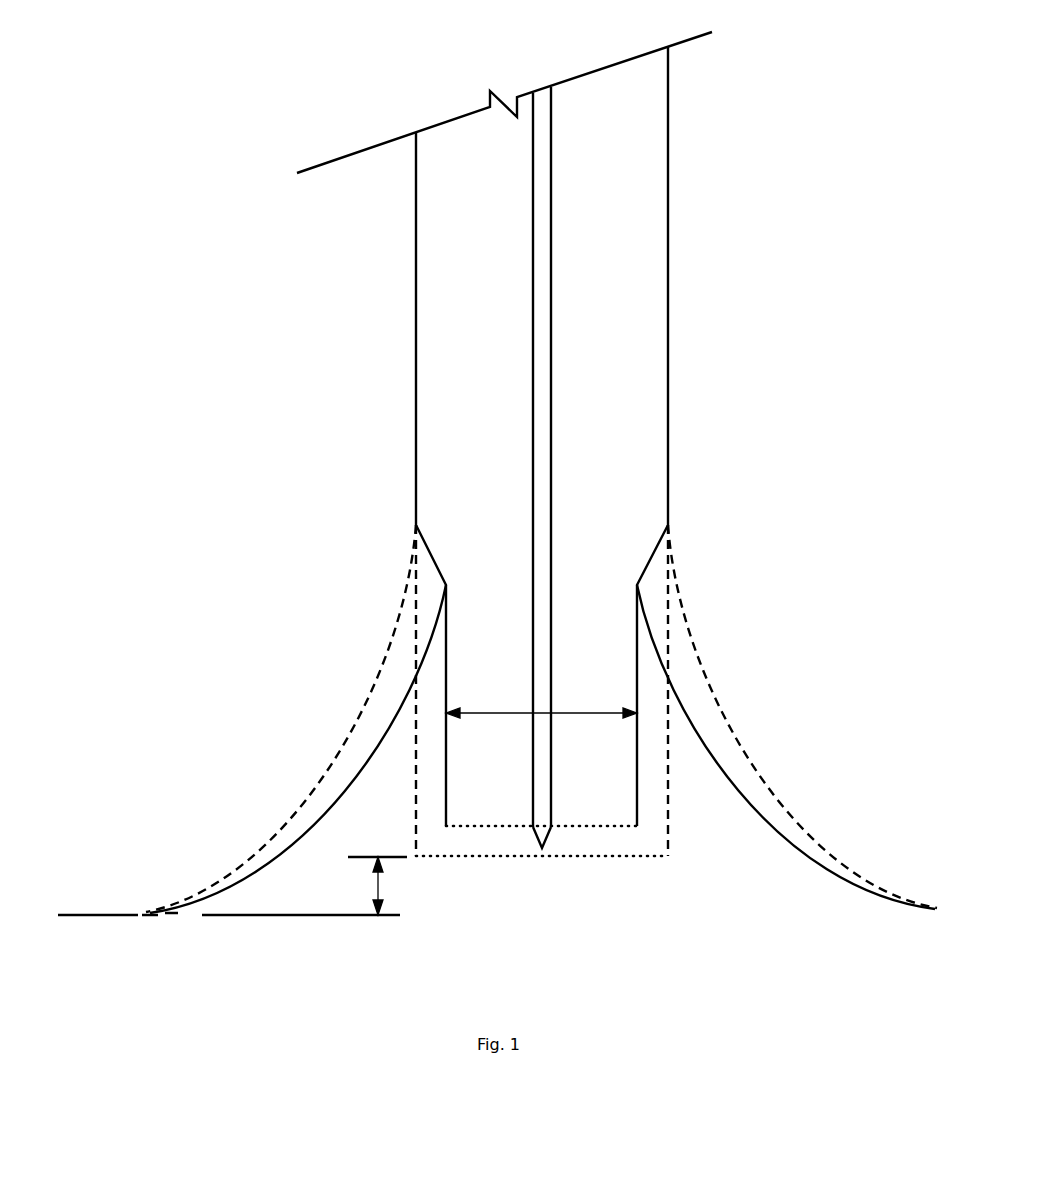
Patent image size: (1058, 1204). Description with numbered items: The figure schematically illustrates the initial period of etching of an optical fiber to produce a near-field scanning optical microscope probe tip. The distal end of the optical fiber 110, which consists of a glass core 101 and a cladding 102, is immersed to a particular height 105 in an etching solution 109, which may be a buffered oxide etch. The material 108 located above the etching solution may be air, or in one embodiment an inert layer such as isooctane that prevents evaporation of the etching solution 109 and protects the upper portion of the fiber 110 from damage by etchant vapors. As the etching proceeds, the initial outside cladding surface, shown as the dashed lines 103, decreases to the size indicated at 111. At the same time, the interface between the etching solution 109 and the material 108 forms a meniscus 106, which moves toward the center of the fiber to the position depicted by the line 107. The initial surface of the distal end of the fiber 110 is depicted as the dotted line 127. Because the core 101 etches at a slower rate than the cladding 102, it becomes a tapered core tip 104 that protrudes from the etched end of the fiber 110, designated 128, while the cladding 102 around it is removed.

The glass core 101 is at (552, 323).
The cladding 102 is at (669, 398).
The initial outside cladding surface 103 is at (417, 778).
The tapered core tip 104 is at (545, 842).
The height 105 is at (383, 887).
The meniscus 106 is at (386, 646).
The meniscus position line 107 is at (288, 857).
The material above the etching solution 108 is at (129, 884).
The etching solution 109 is at (129, 954).
The optical fiber 110 is at (450, 332).
The reduced cladding size 111 is at (593, 713).
The initial surface of the distal end 127 is at (483, 857).
The etched end of the fiber 128 is at (490, 826).